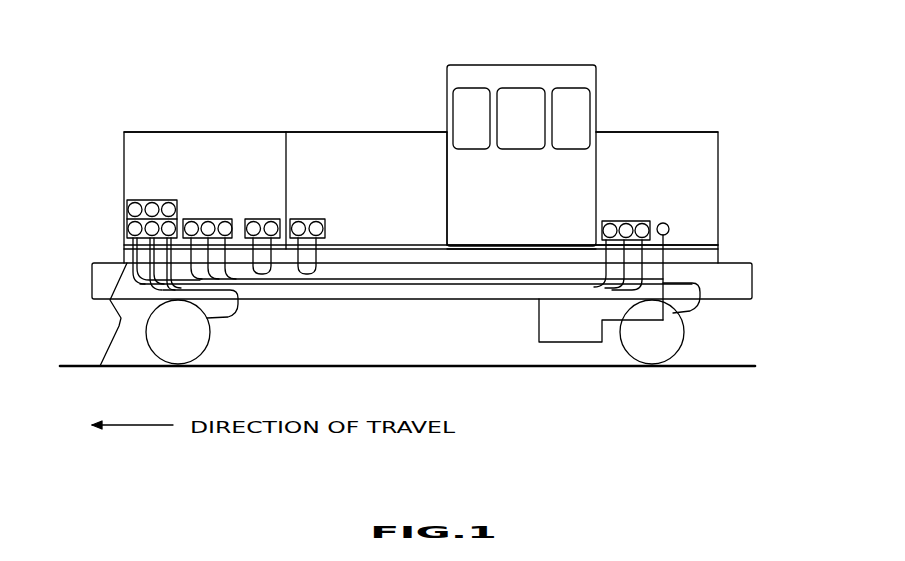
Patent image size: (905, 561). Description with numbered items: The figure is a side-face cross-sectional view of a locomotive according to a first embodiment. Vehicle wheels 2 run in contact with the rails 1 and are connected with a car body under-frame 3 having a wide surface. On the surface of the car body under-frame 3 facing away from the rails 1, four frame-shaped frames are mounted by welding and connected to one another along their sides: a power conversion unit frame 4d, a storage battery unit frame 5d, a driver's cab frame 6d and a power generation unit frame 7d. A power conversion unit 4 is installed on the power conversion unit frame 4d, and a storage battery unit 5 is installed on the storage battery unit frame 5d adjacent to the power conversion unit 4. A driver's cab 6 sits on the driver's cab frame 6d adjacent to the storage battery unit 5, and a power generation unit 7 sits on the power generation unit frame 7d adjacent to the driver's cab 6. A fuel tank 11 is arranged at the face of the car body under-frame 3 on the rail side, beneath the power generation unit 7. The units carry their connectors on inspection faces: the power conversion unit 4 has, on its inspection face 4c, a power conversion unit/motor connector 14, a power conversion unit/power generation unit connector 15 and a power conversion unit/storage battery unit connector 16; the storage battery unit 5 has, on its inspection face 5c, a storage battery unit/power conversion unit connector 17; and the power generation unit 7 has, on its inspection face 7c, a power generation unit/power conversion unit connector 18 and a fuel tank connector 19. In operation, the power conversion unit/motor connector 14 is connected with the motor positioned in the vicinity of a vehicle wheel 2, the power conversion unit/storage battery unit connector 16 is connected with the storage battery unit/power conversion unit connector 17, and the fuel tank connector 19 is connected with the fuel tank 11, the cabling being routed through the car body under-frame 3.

The rails 1 is at (240, 367).
The vehicle wheels 2 is at (210, 333).
The car body under-frame 3 is at (400, 299).
The power conversion unit 4 is at (140, 131).
The inspection face 4c is at (172, 148).
The power conversion unit frame 4d is at (100, 366).
The storage battery unit 5 is at (307, 130).
The inspection face 5c is at (328, 148).
The storage battery unit frame 5d is at (407, 246).
The driver's cab 6 is at (483, 63).
The driver's cab frame 6d is at (478, 246).
The power generation unit 7 is at (608, 131).
The inspection face 7c is at (662, 142).
The power generation unit frame 7d is at (703, 244).
The fuel tank 11 is at (547, 342).
The power conversion unit/motor connector 14 is at (127, 210).
The power conversion unit/power generation unit connector 15 is at (195, 217).
The power conversion unit/storage battery unit connector 16 is at (270, 219).
The storage battery unit/power conversion unit connector 17 is at (300, 219).
The power generation unit/power conversion unit connector 18 is at (608, 221).
The fuel tank connector 19 is at (665, 223).